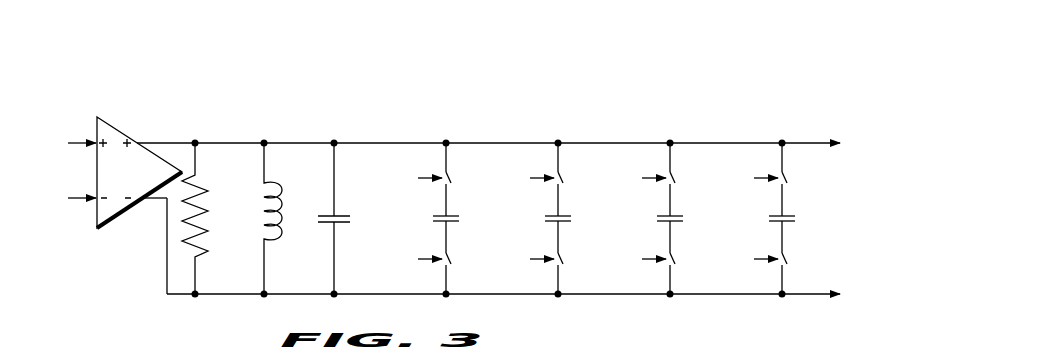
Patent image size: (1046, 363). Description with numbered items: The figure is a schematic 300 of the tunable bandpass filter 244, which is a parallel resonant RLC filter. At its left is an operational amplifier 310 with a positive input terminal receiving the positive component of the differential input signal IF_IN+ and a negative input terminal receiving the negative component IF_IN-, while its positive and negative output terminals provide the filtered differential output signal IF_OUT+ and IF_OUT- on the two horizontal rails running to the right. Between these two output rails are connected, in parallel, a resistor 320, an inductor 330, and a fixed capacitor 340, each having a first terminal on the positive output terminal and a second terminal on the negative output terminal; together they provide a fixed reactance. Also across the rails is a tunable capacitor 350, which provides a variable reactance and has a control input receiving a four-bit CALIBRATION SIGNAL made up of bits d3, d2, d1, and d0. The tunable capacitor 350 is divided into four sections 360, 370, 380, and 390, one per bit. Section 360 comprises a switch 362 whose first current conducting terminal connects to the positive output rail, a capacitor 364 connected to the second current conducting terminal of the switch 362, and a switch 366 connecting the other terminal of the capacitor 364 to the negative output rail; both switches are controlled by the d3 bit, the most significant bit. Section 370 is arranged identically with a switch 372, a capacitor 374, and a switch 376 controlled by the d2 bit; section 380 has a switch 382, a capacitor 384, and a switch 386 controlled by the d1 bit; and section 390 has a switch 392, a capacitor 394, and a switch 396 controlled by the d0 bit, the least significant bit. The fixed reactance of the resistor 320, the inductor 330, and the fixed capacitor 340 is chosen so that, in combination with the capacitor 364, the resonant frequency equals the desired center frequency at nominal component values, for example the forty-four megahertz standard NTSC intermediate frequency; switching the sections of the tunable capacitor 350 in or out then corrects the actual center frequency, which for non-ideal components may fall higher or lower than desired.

The tunable bandpass filter 244 is at (78, 99).
The tunable filter circuit 300 is at (787, 51).
The operational amplifier 310 is at (121, 128).
The resistor 320 is at (204, 212).
The inductor 330 is at (300, 201).
The fixed capacitor 340 is at (340, 219).
The tunable capacitor 350 is at (357, 129).
The section 360 is at (446, 129).
The switch 362 is at (472, 175).
The capacitor 364 is at (452, 213).
The switch 366 is at (472, 258).
The section 370 is at (558, 129).
The switch 372 is at (584, 175).
The capacitor 374 is at (564, 213).
The switch 376 is at (584, 258).
The section 380 is at (670, 129).
The switch 382 is at (696, 175).
The capacitor 384 is at (676, 213).
The switch 386 is at (696, 258).
The section 390 is at (782, 129).
The switch 392 is at (808, 175).
The capacitor 394 is at (788, 213).
The switch 396 is at (808, 258).